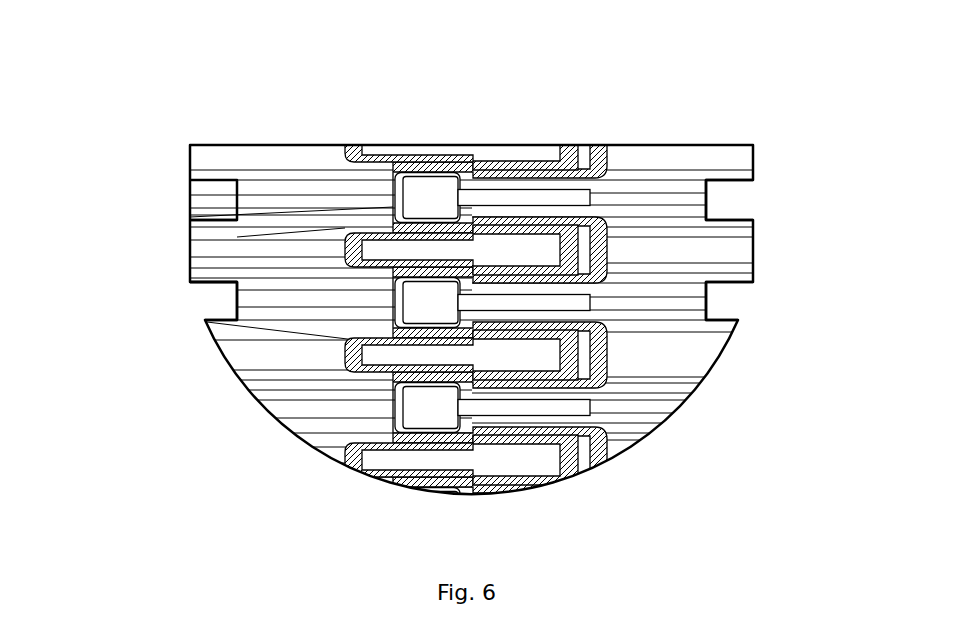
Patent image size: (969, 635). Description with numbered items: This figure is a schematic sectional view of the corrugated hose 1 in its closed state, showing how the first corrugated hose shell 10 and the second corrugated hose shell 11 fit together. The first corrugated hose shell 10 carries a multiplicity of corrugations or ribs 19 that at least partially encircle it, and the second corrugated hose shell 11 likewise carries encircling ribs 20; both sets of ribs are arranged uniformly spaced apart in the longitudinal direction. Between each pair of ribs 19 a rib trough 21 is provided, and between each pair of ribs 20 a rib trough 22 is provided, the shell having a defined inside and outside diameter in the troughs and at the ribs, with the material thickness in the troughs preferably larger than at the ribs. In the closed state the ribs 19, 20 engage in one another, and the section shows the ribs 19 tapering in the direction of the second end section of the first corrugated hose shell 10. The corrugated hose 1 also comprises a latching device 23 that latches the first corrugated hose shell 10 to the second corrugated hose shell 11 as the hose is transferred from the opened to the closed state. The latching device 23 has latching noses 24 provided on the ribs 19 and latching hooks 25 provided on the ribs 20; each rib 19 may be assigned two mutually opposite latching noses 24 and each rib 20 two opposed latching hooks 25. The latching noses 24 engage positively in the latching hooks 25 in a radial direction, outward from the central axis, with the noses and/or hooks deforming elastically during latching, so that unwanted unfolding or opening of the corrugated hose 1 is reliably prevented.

The corrugated hose 1 is at (466, 103).
The first corrugated hose shell 10 is at (227, 138).
The second corrugated hose shell 11 is at (677, 138).
The ribs 19 is at (190, 250).
The ribs 20 is at (753, 263).
The rib trough 21 is at (237, 293).
The rib trough 22 is at (740, 305).
The latching device 23 is at (595, 172).
The latching noses 24 is at (607, 270).
The latching hooks 25 is at (200, 277).